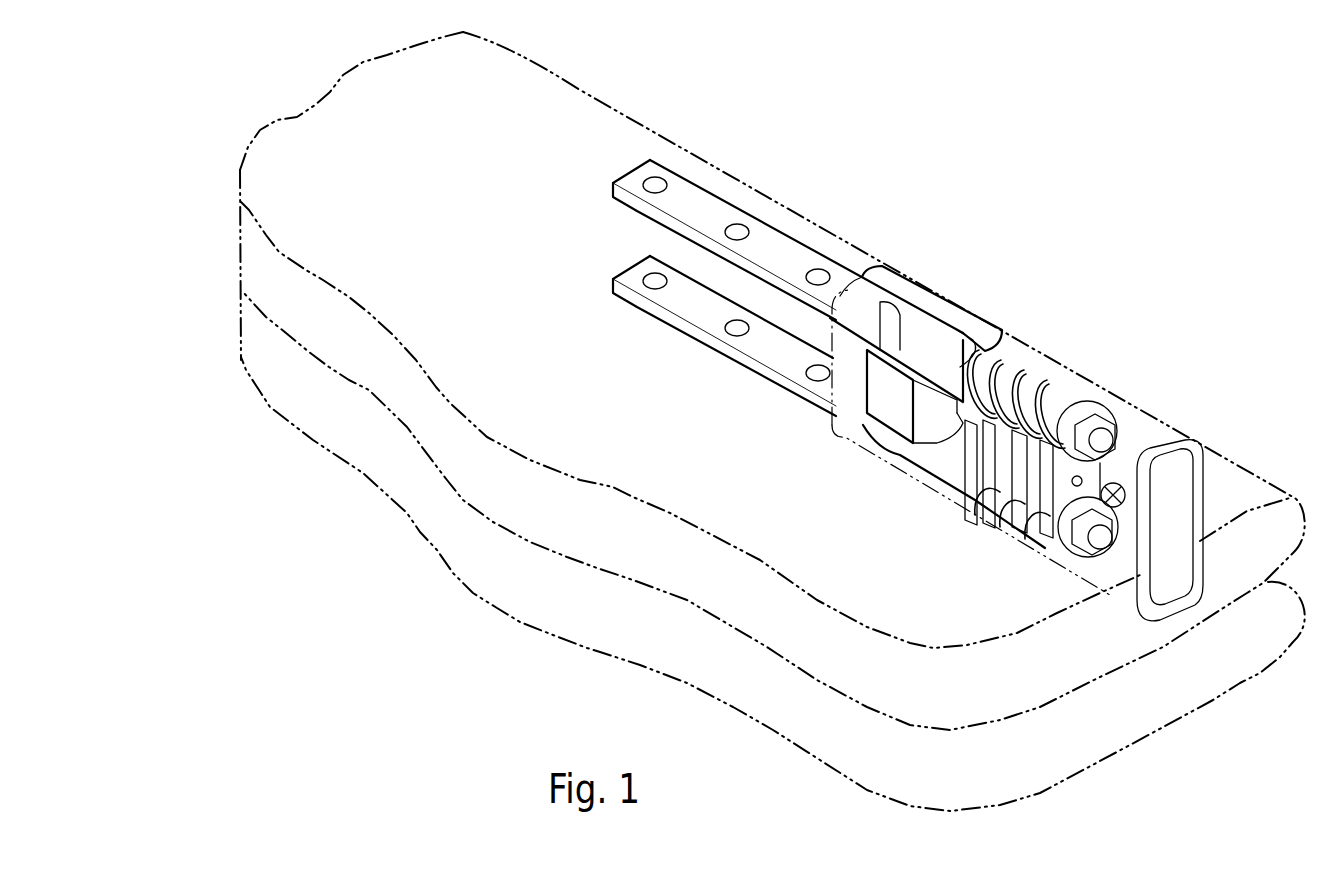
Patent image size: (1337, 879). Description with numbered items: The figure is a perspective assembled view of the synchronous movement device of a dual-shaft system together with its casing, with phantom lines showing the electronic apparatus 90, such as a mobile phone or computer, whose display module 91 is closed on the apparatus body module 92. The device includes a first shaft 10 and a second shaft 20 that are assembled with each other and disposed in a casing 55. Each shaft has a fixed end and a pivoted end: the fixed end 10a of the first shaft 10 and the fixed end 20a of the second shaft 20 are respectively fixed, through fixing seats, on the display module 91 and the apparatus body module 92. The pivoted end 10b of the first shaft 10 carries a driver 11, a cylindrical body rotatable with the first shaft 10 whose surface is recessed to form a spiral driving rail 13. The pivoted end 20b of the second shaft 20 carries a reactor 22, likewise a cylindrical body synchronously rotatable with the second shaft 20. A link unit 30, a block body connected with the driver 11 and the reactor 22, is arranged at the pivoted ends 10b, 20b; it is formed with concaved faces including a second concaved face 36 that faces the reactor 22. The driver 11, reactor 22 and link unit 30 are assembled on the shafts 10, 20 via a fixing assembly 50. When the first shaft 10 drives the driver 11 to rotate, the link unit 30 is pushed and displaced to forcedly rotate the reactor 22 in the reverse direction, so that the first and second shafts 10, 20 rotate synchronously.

The first shaft 10 is at (890, 344).
The fixed end 10a is at (767, 232).
The pivoted end 10b is at (1115, 428).
The driver 11 is at (920, 318).
The driving rail 13 is at (983, 328).
The second shaft 20 is at (869, 450).
The fixed end 20a is at (698, 345).
The pivoted end 20b is at (1110, 562).
The reactor 22 is at (937, 473).
The link unit 30 is at (955, 442).
The second concaved face 36 is at (910, 453).
The fixing assembly 50 is at (1067, 369).
The casing 55 is at (1172, 412).
The electronic apparatus 90 is at (772, 421).
The display module 91 is at (565, 66).
The apparatus body module 92 is at (400, 528).